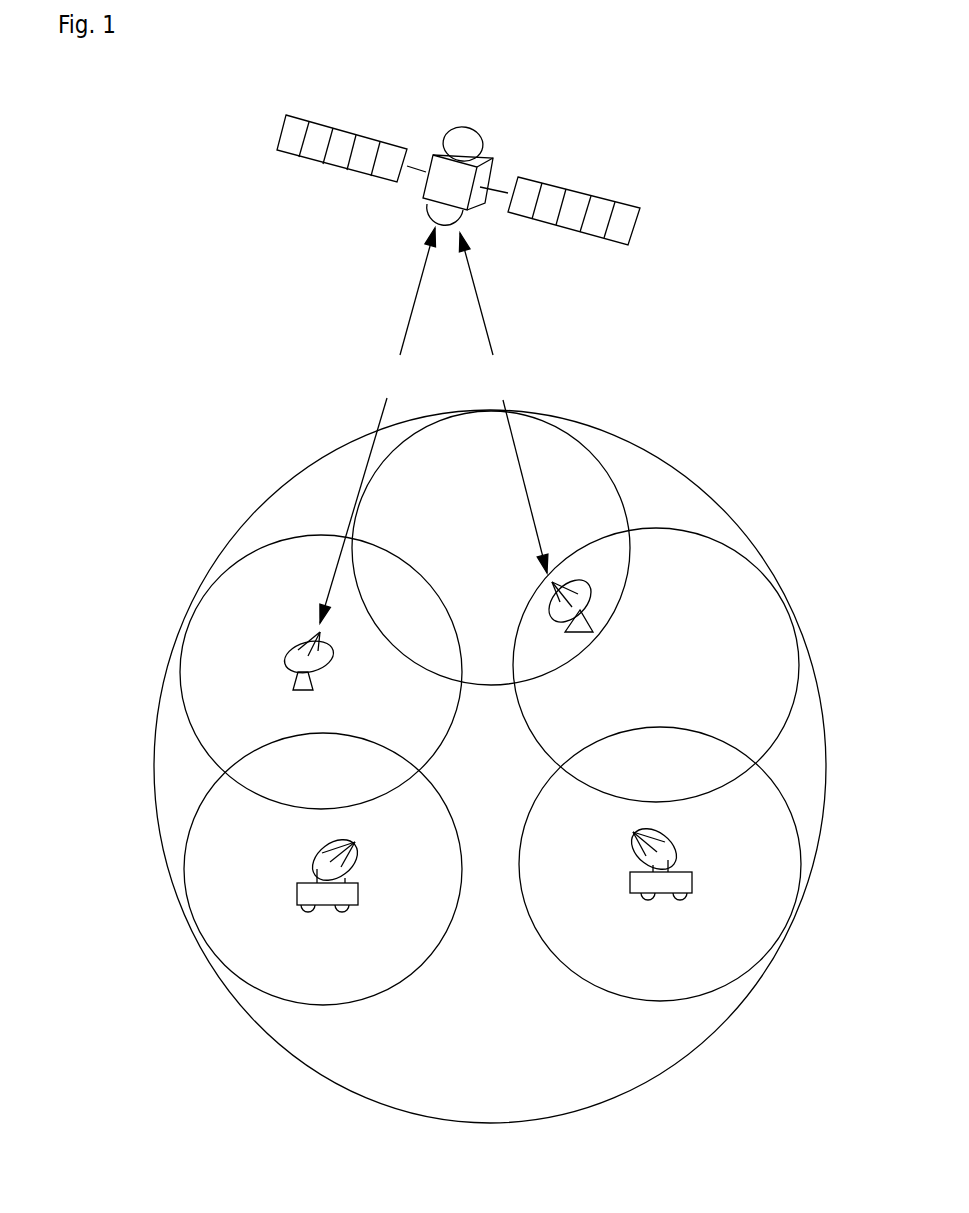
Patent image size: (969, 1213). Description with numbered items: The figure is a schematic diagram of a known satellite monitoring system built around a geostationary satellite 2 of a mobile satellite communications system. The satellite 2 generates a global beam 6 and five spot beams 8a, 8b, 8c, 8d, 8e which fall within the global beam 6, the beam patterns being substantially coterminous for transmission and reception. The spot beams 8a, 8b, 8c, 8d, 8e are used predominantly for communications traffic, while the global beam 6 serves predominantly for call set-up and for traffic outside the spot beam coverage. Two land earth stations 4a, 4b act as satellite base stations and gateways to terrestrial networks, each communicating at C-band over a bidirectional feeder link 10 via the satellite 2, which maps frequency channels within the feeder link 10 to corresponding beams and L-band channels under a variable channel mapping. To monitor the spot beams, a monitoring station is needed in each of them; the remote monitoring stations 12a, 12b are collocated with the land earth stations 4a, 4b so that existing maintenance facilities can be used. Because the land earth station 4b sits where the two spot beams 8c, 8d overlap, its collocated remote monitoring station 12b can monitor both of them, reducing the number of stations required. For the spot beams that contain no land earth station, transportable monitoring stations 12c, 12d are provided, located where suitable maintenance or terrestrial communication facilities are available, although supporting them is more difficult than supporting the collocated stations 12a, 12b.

The satellite 2 is at (495, 168).
The land earth station 4a is at (200, 631).
The land earth station 4b is at (679, 535).
The global beam 6 is at (498, 1049).
The spot beam 8a is at (346, 969).
The spot beam 8b is at (382, 701).
The spot beam 8c is at (503, 569).
The spot beam 8d is at (685, 671).
The spot beam 8e is at (726, 948).
The feeder link 10 is at (405, 386).
The remote monitoring station 12a is at (284, 642).
The remote monitoring station 12b is at (577, 622).
The transportable monitoring station 12c is at (297, 891).
The transportable monitoring station 12d is at (680, 888).